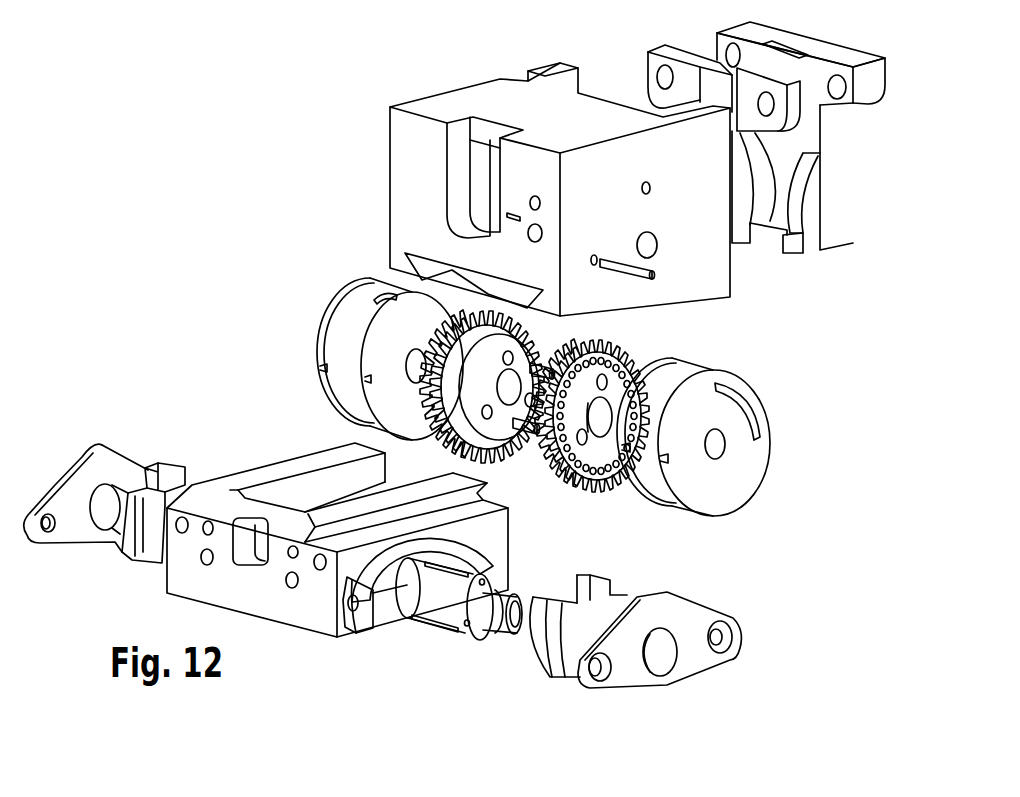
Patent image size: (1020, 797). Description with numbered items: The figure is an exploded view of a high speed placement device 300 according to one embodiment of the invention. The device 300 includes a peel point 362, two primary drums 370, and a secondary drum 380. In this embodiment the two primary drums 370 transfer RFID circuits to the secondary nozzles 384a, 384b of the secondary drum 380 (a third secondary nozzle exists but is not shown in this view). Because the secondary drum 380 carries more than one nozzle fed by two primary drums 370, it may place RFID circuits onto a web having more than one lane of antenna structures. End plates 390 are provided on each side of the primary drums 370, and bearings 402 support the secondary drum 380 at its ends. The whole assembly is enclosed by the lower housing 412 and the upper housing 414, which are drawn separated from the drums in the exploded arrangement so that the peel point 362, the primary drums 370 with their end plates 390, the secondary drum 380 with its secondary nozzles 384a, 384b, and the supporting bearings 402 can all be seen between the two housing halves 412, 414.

The high speed placement device 300 is at (213, 165).
The upper housing 414 is at (398, 128).
The peel point 362 is at (773, 230).
The primary drums 370 is at (487, 312).
The end plates 390 is at (347, 333).
The lower housing 412 is at (257, 482).
The bearings 402 is at (188, 505).
The secondary nozzle 384a is at (435, 535).
The secondary nozzle 384b is at (412, 618).
The secondary drum 380 is at (393, 626).